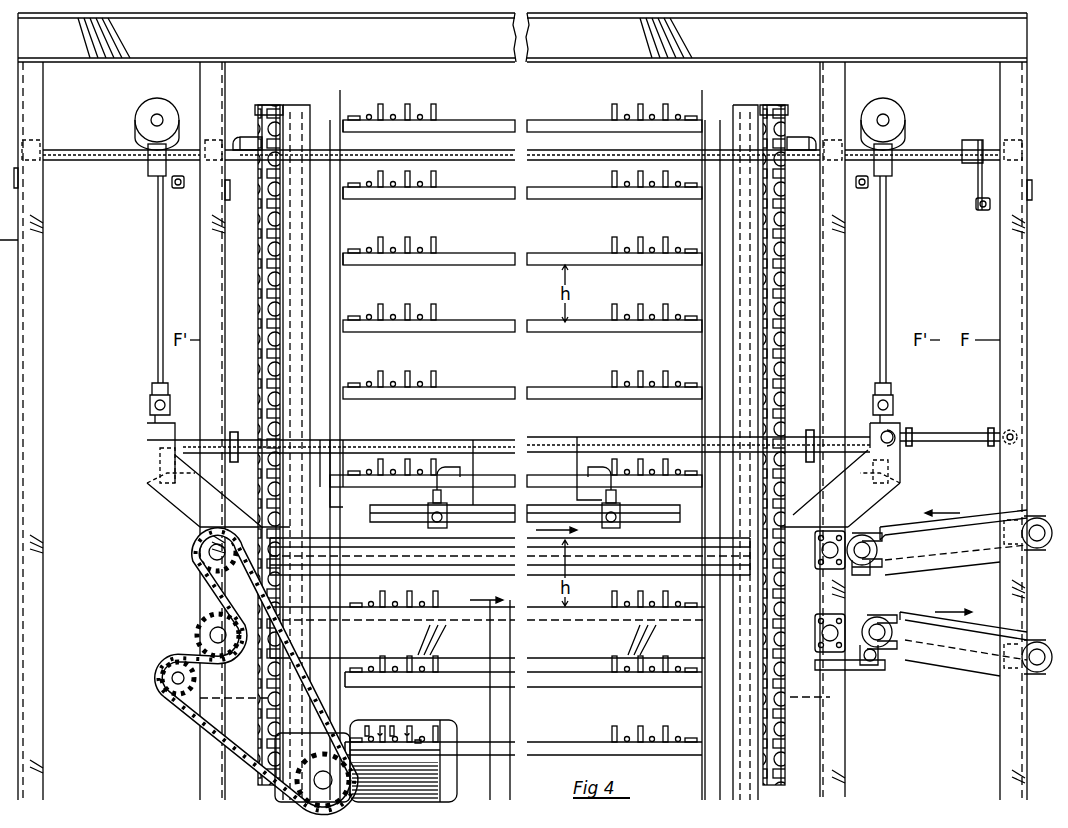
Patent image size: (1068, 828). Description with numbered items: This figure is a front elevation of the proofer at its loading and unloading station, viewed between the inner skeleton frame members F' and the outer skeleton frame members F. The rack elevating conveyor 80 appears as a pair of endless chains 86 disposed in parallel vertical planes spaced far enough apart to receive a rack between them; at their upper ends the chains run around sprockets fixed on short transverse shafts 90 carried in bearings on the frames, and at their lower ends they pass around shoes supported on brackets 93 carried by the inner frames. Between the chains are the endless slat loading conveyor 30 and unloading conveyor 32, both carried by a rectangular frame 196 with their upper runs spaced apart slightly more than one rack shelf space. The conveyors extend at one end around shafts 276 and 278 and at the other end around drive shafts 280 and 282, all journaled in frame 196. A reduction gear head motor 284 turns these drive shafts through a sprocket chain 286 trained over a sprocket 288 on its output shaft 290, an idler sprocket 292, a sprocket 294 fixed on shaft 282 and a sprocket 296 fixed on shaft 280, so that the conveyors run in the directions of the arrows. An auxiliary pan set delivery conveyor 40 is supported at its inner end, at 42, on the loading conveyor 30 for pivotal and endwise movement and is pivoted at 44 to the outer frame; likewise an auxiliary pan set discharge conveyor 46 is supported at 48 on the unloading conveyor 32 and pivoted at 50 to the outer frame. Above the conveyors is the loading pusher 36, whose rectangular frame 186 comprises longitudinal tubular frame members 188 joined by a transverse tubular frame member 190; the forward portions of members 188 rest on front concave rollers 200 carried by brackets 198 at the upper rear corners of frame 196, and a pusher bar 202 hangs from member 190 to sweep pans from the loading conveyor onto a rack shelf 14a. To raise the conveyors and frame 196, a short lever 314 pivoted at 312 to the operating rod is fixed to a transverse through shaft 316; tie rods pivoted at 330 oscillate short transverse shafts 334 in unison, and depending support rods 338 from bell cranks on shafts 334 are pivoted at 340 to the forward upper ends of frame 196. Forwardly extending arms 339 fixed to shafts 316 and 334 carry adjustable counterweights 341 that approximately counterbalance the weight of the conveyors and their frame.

The frame plate 14a is at (487, 475).
The loading conveyor 30 is at (370, 556).
The unloading conveyor 32 is at (470, 607).
The loading pusher 36 is at (470, 505).
The auxiliary pan set delivery conveyor 40 is at (974, 512).
The inner end support of delivery conveyor 42 is at (878, 537).
The outer pivotal support of delivery conveyor 44 is at (1037, 517).
The auxiliary pan set discharge conveyor 46 is at (942, 665).
The inner end support of discharge conveyor 48 is at (885, 655).
The outer pivotal support of discharge conveyor 50 is at (1040, 672).
The elevator chain 80 is at (264, 375).
The endless chains 86 is at (262, 293).
The short transverse shafts 90 is at (244, 137).
The brackets 93 is at (228, 737).
The rectangular frame 186 is at (375, 432).
The tubular frame members 188 is at (160, 453).
The transverse tubular frame member 190 is at (570, 440).
The rectangular frame 196 is at (172, 505).
The bracket 198 is at (158, 477).
The front concave roller 200 is at (147, 486).
The pusher bar 202 is at (645, 505).
The shaft 276 is at (822, 540).
The shaft 278 is at (838, 648).
The drive shaft 280 is at (208, 556).
The drive shaft 282 is at (212, 636).
The reduction gear head motor 284 is at (448, 730).
The sprocket chain 286 is at (168, 703).
The sprocket 288 is at (290, 763).
The output shaft 290 is at (330, 772).
The idler sprocket 292 is at (165, 680).
The sprocket 294 is at (196, 631).
The sprocket 296 is at (198, 548).
The pivotal connection 312 is at (983, 212).
The short lever 314 is at (978, 182).
The transverse through shaft 316 is at (452, 150).
The pivotal connection 330 is at (178, 192).
The short transverse shaft 334 is at (83, 150).
The support rod 338 is at (158, 240).
The forwardly extending arm 339 is at (152, 115).
The pivotal connection 340 is at (150, 400).
The counterweight 341 is at (164, 118).